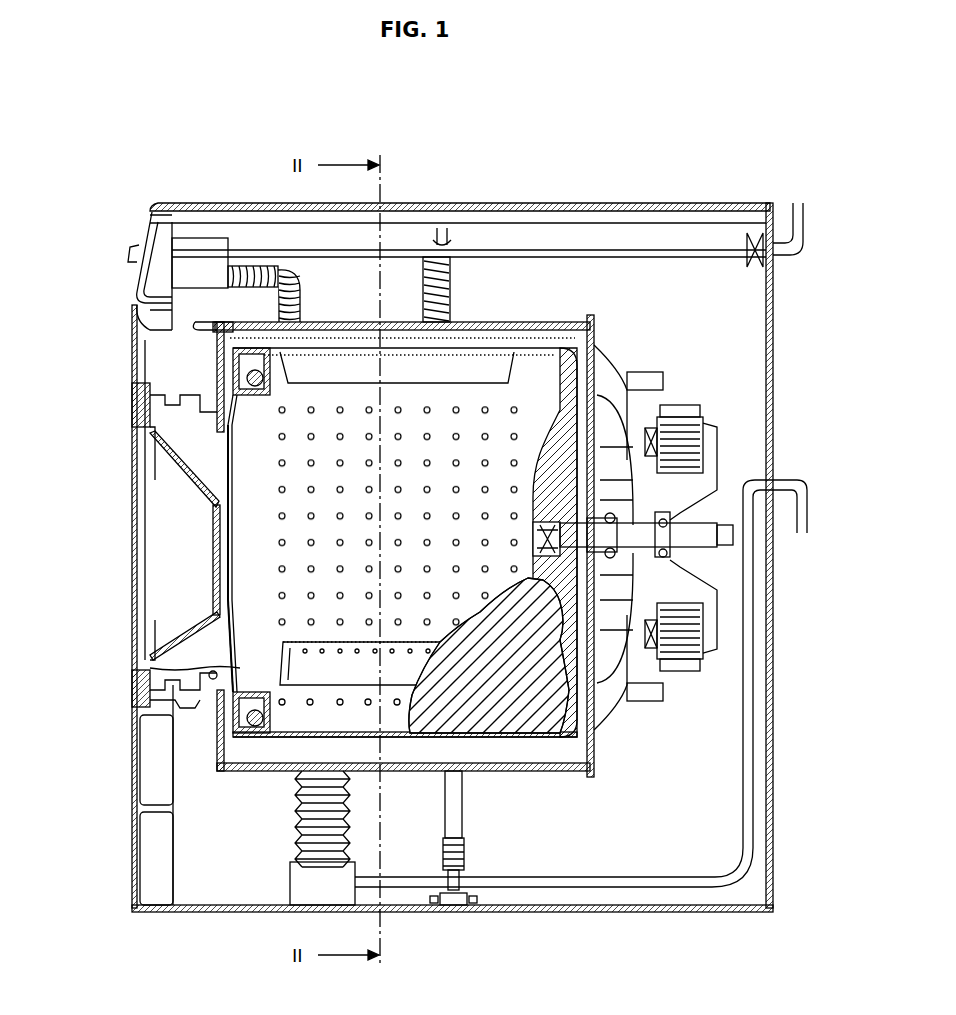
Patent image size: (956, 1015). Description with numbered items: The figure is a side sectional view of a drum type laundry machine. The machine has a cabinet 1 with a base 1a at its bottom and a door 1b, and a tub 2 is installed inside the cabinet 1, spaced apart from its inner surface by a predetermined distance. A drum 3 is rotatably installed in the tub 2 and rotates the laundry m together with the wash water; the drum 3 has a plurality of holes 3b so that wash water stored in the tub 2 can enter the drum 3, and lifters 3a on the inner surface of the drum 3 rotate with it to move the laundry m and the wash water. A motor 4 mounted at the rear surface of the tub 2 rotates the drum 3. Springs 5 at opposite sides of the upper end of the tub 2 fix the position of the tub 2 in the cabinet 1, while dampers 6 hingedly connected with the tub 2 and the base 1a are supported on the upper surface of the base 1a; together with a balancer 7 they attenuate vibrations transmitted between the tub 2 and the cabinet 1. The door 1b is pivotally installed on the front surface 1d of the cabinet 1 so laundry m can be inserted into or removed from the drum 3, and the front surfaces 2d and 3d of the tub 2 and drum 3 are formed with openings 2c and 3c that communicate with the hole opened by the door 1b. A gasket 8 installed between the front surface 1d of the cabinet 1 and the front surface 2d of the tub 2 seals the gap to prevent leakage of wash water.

The cabinet 1 is at (201, 915).
The base 1a is at (687, 912).
The door 1b is at (143, 572).
The front surface of the cabinet 1d is at (160, 357).
The tub 2 is at (480, 330).
The opening of the tub 2c is at (207, 440).
The front surface of the tub 2d is at (217, 327).
The drum 3 is at (508, 352).
The lifters 3a is at (280, 663).
The holes 3b is at (243, 628).
The opening of the drum 3c is at (220, 483).
The front surface of the drum 3d is at (220, 365).
The motor 4 is at (712, 428).
The springs 5 is at (445, 300).
The dampers 6 is at (462, 828).
The balancer 7 is at (237, 673).
The gasket 8 is at (190, 700).
The laundry m is at (505, 698).